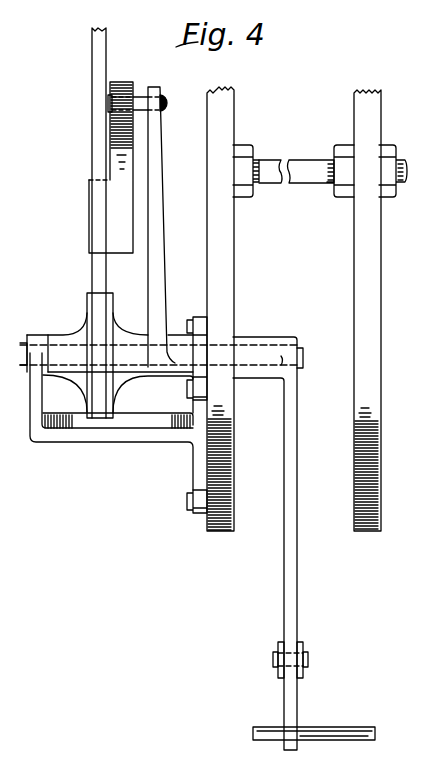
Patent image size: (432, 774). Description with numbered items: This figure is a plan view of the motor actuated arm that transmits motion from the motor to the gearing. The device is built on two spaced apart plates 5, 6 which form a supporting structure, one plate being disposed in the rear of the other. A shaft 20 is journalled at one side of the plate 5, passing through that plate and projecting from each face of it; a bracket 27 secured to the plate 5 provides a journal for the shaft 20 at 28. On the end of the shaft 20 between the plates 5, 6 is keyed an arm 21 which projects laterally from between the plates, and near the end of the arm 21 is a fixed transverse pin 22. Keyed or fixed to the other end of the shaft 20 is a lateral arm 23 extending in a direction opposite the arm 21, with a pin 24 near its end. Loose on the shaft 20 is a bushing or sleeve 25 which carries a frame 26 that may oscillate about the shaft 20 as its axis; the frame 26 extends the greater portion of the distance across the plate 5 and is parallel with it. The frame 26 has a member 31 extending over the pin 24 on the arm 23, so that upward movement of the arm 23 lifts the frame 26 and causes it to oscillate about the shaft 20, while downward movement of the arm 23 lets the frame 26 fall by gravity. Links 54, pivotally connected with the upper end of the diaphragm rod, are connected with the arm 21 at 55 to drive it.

The plate 5 is at (233, 308).
The plate 6 is at (354, 303).
The shaft 20 is at (303, 357).
The arm 21 is at (297, 576).
The transverse pin 22 is at (315, 727).
The lateral arm 23 is at (165, 258).
The pin 24 is at (140, 95).
The bushing or sleeve 25 is at (127, 382).
The frame 26 is at (92, 65).
The bracket 27 is at (75, 442).
The journal 28 is at (37, 335).
The member 31 is at (130, 152).
The links 54 is at (306, 667).
The connection of links to arm 55 is at (308, 656).